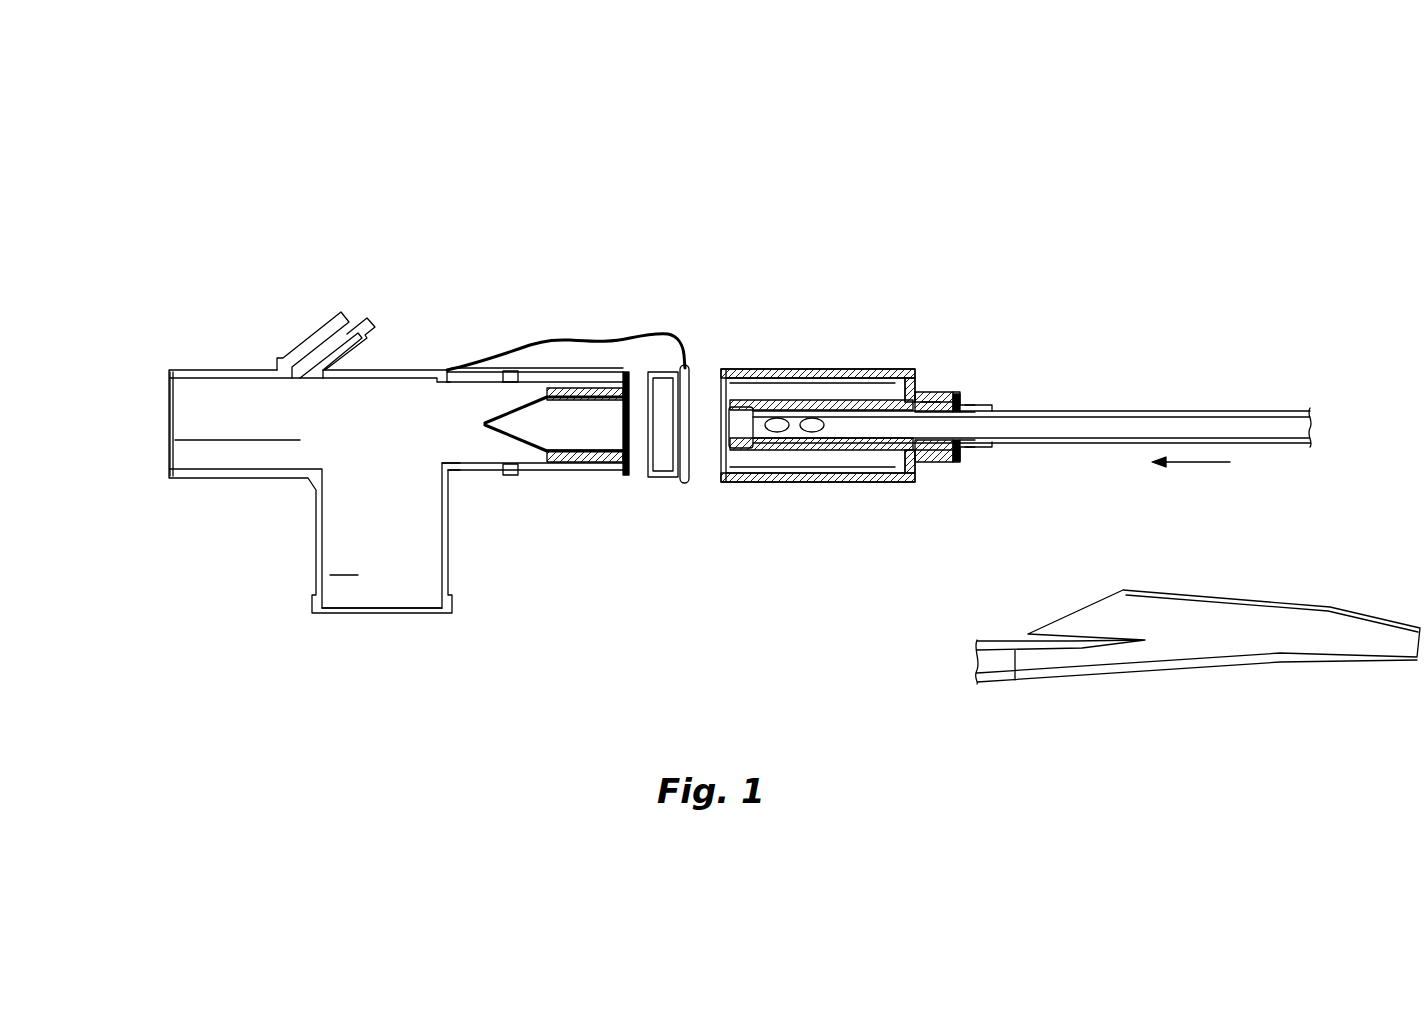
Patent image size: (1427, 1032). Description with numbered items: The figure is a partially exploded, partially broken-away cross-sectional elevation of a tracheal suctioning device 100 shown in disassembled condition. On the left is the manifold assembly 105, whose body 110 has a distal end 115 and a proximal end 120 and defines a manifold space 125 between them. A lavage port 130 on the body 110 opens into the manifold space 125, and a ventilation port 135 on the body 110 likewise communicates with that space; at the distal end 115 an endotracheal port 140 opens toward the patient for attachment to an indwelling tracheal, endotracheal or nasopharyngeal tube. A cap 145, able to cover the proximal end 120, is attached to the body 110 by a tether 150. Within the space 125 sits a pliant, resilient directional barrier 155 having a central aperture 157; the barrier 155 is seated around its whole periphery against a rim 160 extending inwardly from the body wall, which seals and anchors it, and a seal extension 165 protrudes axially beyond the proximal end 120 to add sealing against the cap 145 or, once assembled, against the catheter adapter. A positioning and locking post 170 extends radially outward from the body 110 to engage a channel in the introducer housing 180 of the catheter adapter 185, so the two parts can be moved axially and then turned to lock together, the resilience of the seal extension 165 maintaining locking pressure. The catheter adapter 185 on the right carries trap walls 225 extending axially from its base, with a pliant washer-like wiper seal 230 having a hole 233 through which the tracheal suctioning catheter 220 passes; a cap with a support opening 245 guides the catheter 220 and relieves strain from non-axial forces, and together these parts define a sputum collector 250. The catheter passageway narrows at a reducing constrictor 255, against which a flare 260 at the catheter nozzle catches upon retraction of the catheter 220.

The device 100 is at (778, 432).
The manifold assembly 105 is at (298, 474).
The body 110 is at (365, 376).
The distal end 115 is at (174, 370).
The proximal end 120 is at (615, 478).
The space 125 is at (374, 448).
The lavage port 130 is at (362, 312).
The ventilation port 135 is at (358, 575).
The endotracheal port 140 is at (220, 447).
The cap 145 is at (686, 487).
The tether 150 is at (683, 330).
The directional barrier 155 is at (503, 477).
The central aperture 157 is at (485, 423).
The rim 160 is at (590, 477).
The seal extension 165 is at (630, 478).
The positioning and locking post 170 is at (510, 372).
The introducer housing 180 is at (760, 370).
The catheter adapter 185 is at (912, 385).
The tracheal suctioning catheter 220 is at (1172, 410).
The trap walls 225 is at (935, 390).
The wiper seal 230 is at (960, 393).
The hole 233 is at (975, 405).
The support opening 245 is at (975, 447).
The sputum collector 250 is at (925, 455).
The reducing constrictor 255 is at (862, 450).
The flare 260 is at (753, 445).